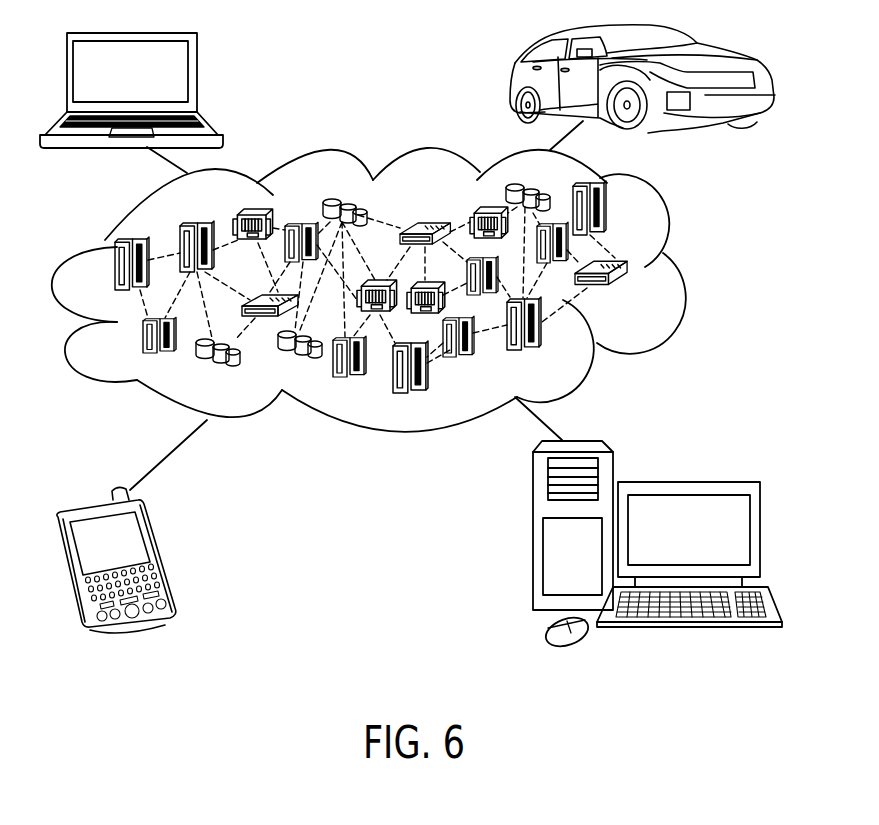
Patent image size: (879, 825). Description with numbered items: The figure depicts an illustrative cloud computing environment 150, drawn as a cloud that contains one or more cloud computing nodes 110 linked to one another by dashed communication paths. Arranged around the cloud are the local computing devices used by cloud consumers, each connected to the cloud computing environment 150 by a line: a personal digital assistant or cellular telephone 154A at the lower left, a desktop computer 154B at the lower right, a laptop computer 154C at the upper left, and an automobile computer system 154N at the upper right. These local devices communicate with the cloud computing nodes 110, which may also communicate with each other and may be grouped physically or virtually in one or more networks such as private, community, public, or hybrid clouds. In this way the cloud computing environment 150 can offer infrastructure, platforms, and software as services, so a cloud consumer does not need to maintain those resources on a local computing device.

The cloud computing nodes 110 is at (621, 296).
The cloud computing environment 150 is at (682, 273).
The personal digital assistant (PDA) or cellular telephone 154A is at (153, 539).
The desktop computer 154B is at (693, 482).
The laptop computer 154C is at (197, 65).
The automobile computer system 154N is at (700, 44).